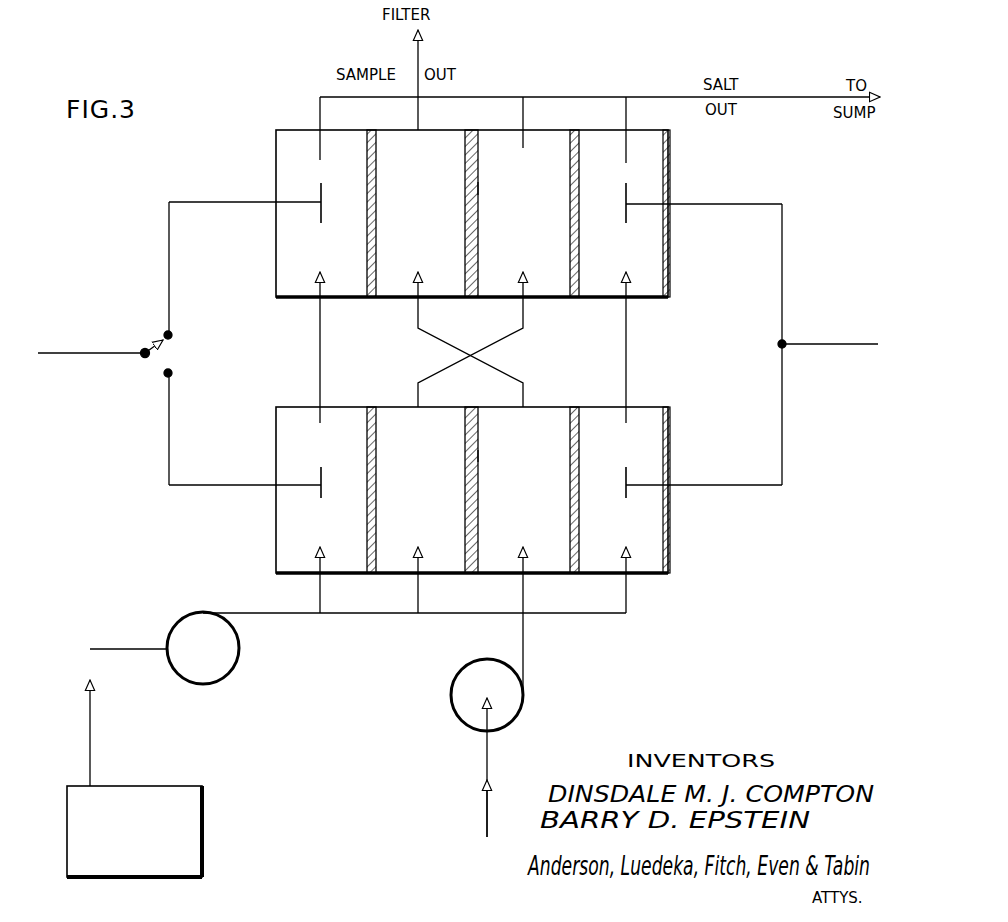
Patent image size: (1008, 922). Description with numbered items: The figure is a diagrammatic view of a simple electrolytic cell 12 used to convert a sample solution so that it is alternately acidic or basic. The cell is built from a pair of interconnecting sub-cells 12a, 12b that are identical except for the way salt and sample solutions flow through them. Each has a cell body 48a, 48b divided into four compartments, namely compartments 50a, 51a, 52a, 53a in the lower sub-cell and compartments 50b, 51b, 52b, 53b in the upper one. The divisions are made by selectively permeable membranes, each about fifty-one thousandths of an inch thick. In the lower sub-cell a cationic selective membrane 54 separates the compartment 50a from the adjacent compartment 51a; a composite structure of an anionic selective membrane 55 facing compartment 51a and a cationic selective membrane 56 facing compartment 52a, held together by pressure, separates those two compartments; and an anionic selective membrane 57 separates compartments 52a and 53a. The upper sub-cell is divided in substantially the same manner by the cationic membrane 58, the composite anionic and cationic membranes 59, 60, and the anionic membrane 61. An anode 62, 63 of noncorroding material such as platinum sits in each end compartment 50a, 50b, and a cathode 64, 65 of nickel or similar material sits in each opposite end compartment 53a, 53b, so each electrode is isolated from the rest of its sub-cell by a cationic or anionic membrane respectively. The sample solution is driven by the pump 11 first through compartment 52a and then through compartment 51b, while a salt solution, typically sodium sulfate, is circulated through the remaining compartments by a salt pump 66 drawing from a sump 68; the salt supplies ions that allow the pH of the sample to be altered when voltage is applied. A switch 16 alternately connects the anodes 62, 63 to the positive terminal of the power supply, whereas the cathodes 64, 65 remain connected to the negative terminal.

The pump 11 is at (458, 678).
The electrolytic cell 12 is at (816, 236).
The sub-cell 12a is at (673, 540).
The sub-cell 12b is at (678, 161).
The switch 16 is at (148, 362).
The cell body 48a is at (668, 406).
The cell body 48b is at (670, 190).
The compartment 50a is at (327, 532).
The compartment 50b is at (327, 255).
The compartment 51a is at (428, 534).
The compartment 51b is at (427, 255).
The compartment 52a is at (530, 533).
The compartment 52b is at (530, 251).
The compartment 53a is at (632, 534).
The compartment 53b is at (630, 257).
The cationic selective membrane 54 is at (376, 460).
The anionic selective membrane 55 is at (465, 466).
The cationic selective membrane 56 is at (478, 456).
The anionic selective membrane 57 is at (570, 467).
The cationic selective membrane 58 is at (376, 201).
The anionic selective membrane 59 is at (465, 207).
The cationic selective membrane 60 is at (478, 188).
The anionic selective membrane 61 is at (570, 192).
The anode 62 is at (321, 470).
The anode 63 is at (321, 195).
The cathode 64 is at (626, 470).
The cathode 65 is at (626, 196).
The salt pump 66 is at (172, 632).
The sump 68 is at (190, 791).